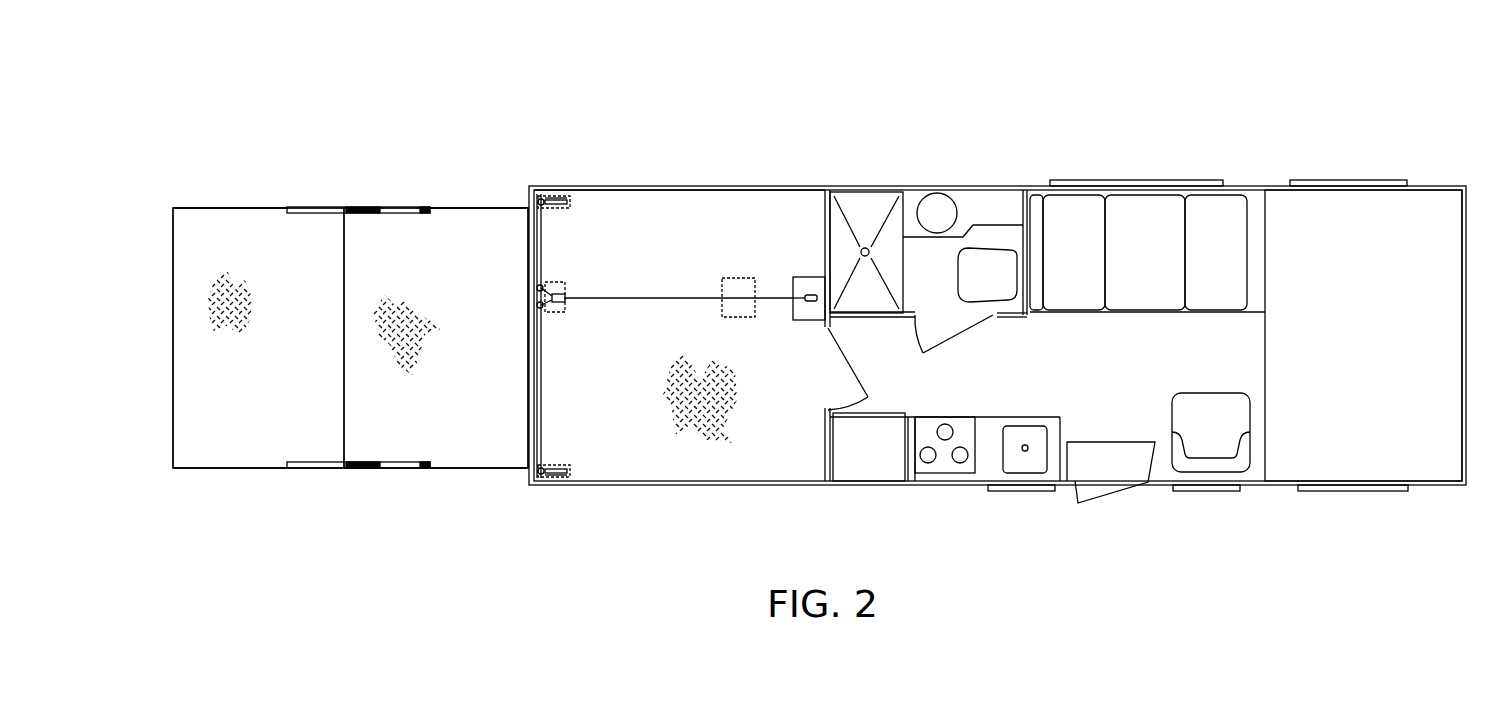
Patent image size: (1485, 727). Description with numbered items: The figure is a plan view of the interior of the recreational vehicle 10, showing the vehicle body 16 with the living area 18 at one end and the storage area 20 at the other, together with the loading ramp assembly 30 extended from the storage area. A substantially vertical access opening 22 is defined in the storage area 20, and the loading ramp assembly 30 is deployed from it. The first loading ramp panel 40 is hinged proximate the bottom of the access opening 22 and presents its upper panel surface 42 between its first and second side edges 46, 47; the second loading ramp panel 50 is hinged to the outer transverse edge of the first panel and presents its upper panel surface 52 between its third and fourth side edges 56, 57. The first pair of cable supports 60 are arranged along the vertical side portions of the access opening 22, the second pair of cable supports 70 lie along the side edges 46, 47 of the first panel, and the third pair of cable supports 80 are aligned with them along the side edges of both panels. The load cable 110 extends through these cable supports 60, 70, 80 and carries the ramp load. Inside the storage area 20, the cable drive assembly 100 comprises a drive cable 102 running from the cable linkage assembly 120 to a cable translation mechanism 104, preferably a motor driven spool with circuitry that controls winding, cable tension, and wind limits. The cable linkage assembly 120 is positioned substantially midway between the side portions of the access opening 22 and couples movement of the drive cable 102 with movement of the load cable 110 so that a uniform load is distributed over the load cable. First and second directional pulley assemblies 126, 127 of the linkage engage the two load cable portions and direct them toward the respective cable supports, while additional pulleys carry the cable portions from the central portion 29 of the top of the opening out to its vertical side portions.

The recreational vehicle 10 is at (997, 273).
The vehicle body 16 is at (844, 185).
The living area 18 is at (1257, 355).
The storage area 20 is at (713, 197).
The access opening 22 is at (491, 287).
The central portion 29 is at (612, 265).
The loading ramp assembly 30 is at (350, 255).
The first loading ramp panel 40 is at (436, 422).
The upper panel surface 42 is at (393, 248).
The first side edge 46 is at (452, 206).
The second side edge 47 is at (477, 470).
The second loading ramp panel 50 is at (258, 414).
The upper panel surface 52 is at (218, 237).
The third side edge 56 is at (212, 206).
The fourth side edge 57 is at (199, 470).
The first pair of cable supports 60 is at (553, 195).
The second pair of cable supports 70 is at (372, 206).
The third pair of cable supports 80 is at (315, 206).
The cable drive assembly 100 is at (778, 287).
The drive cable 102 is at (705, 296).
The cable translation mechanism 104 is at (799, 320).
The load cable 110 is at (542, 362).
The cable linkage assembly 120 is at (615, 322).
The first directional pulley assembly 126 is at (619, 215).
The second directional pulley assembly 127 is at (602, 431).